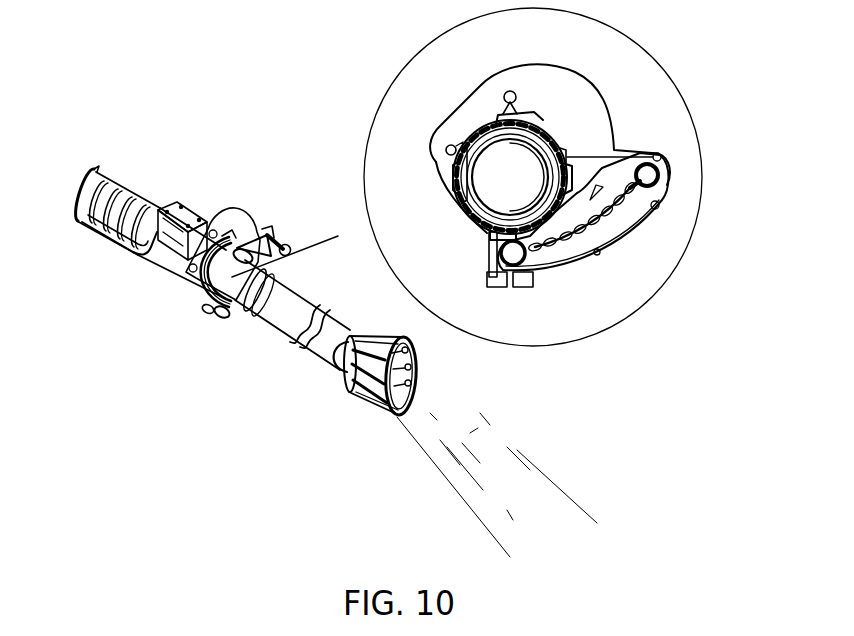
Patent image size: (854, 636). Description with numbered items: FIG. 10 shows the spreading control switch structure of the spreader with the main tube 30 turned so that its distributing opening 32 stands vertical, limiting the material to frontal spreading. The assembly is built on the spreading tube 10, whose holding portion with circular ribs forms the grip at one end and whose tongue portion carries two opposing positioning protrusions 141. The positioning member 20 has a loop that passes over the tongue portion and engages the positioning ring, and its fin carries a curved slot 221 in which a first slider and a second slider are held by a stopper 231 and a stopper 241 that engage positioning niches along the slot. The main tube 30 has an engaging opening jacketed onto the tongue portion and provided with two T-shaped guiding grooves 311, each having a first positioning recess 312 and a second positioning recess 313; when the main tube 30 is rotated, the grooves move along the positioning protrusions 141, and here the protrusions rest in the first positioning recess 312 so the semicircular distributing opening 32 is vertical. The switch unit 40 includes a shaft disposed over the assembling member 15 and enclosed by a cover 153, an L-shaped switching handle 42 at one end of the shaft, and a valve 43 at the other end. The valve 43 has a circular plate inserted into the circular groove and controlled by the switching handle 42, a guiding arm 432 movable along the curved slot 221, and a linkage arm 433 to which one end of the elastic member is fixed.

The spreading tube 10 is at (323, 334).
The assembling member 15 is at (178, 238).
The positioning member 20 is at (287, 210).
The main tube 30 is at (270, 345).
The distributing opening 32 is at (418, 372).
The switch unit 40 is at (238, 216).
The L-shaped switching handle 42 is at (113, 223).
The valve 43 is at (240, 223).
The positioning protrusion 141 is at (454, 178).
The cover 153 is at (190, 208).
The curved slot 221 is at (598, 243).
The stopper 231 is at (516, 266).
The stopper 241 is at (661, 165).
The T-shaped guiding groove 311 is at (471, 221).
The first positioning recess 312 is at (456, 187).
The second positioning recess 313 is at (508, 114).
The guiding arm 432 is at (667, 205).
The linkage arm 433 is at (470, 120).